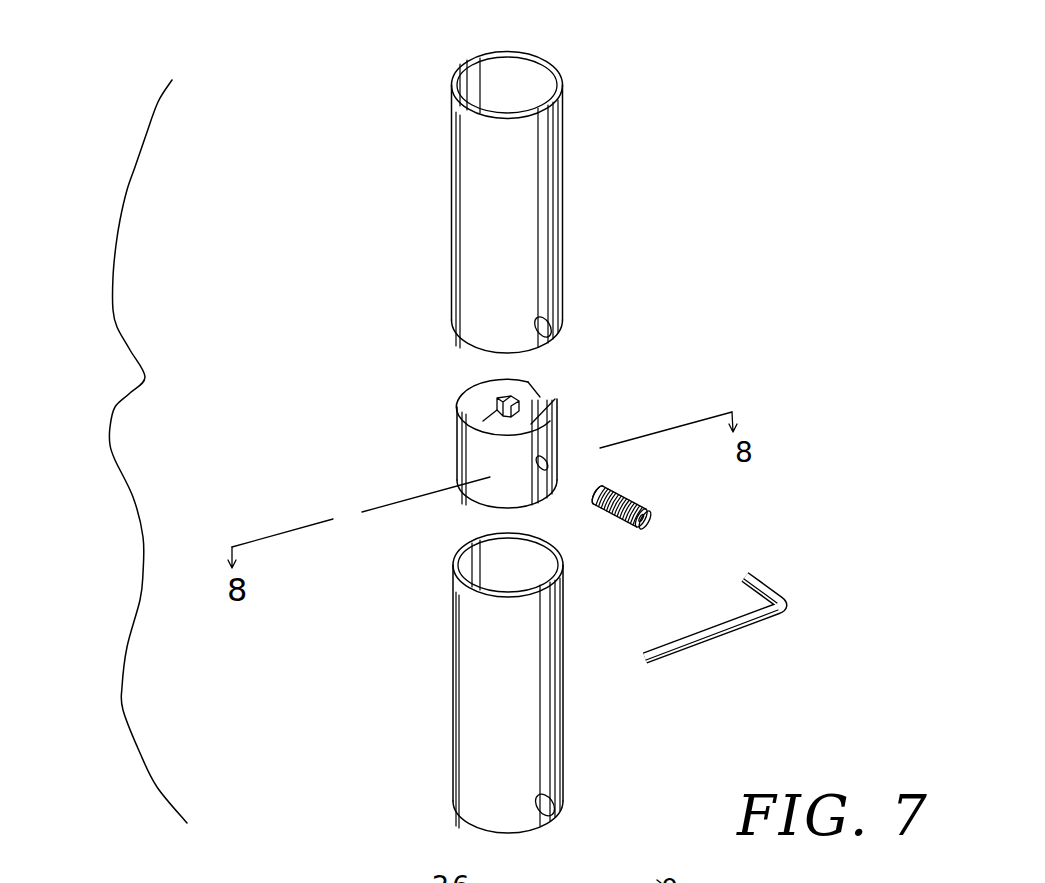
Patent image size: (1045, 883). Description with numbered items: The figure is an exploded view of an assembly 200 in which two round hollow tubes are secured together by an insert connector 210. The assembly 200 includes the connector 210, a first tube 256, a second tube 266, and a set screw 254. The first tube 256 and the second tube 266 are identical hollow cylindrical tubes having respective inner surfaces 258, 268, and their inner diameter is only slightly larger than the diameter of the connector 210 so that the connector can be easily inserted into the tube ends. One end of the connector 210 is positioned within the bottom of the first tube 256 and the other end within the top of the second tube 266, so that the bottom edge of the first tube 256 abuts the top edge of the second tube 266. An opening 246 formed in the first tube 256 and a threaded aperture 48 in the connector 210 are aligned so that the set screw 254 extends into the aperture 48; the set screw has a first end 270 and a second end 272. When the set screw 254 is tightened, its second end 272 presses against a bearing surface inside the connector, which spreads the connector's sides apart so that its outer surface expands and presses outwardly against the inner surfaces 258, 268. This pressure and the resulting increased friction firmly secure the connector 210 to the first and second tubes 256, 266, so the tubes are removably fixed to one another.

The assembly 200 is at (119, 451).
The first tube 256 is at (579, 193).
The inner surface of first tube 258 is at (497, 73).
The opening 246 is at (543, 327).
The connector 210 is at (508, 441).
The threaded aperture 48 is at (555, 458).
The set screw 254 is at (651, 502).
The second end of set screw 272 is at (588, 492).
The second end of set screw 270 is at (650, 522).
The second tube 266 is at (431, 683).
The inner surface of second tube 268 is at (472, 558).